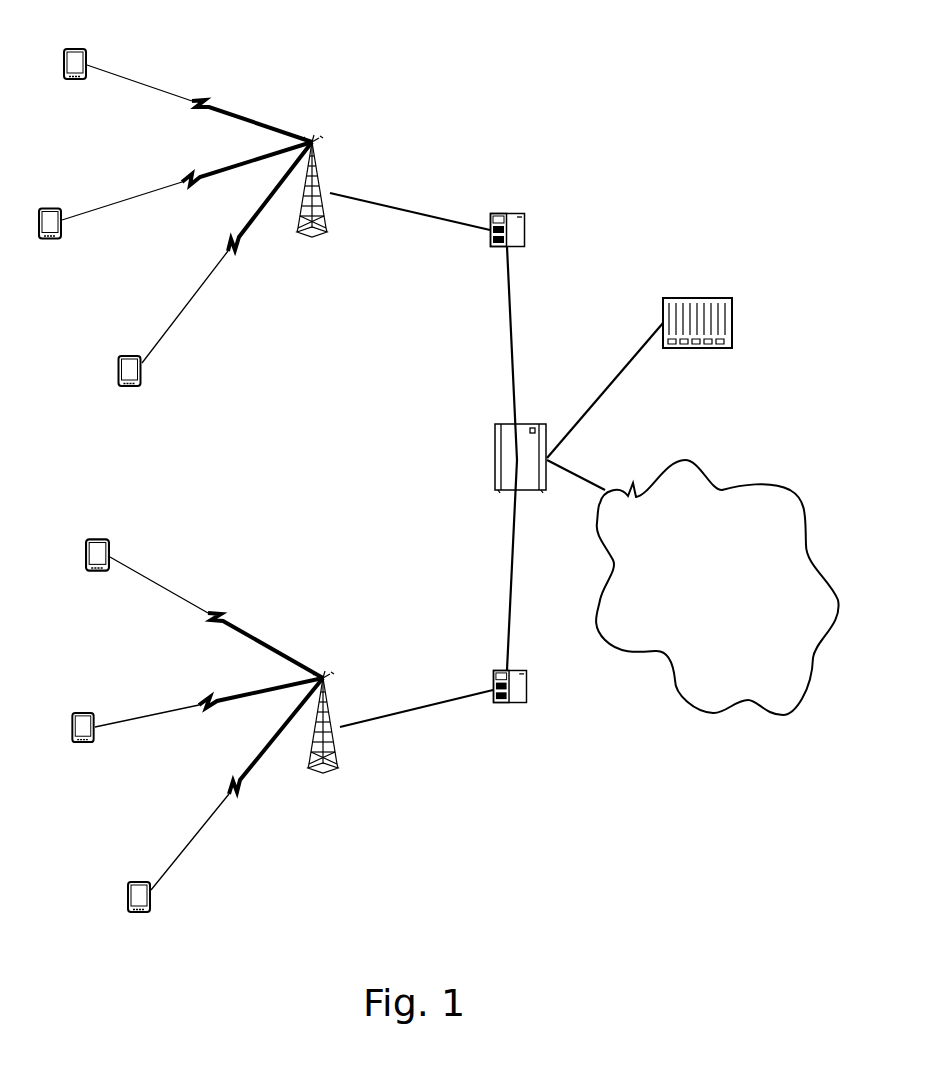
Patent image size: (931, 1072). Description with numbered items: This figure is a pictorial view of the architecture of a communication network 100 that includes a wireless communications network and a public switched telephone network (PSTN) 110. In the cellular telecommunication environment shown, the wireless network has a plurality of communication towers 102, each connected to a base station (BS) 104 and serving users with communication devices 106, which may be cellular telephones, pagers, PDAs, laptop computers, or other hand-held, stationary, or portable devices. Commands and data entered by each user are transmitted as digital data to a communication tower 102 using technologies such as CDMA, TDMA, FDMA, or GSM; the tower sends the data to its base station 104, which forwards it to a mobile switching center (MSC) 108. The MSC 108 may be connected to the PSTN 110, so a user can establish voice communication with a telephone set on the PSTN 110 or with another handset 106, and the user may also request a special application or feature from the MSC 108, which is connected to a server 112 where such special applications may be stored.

The communication network 100 is at (540, 71).
The communication tower 102 is at (313, 142).
The base station 104 is at (508, 215).
The communication device 106 is at (76, 50).
The mobile switching center 108 is at (493, 459).
The public switched telephone network 110 is at (723, 490).
The server 112 is at (680, 298).